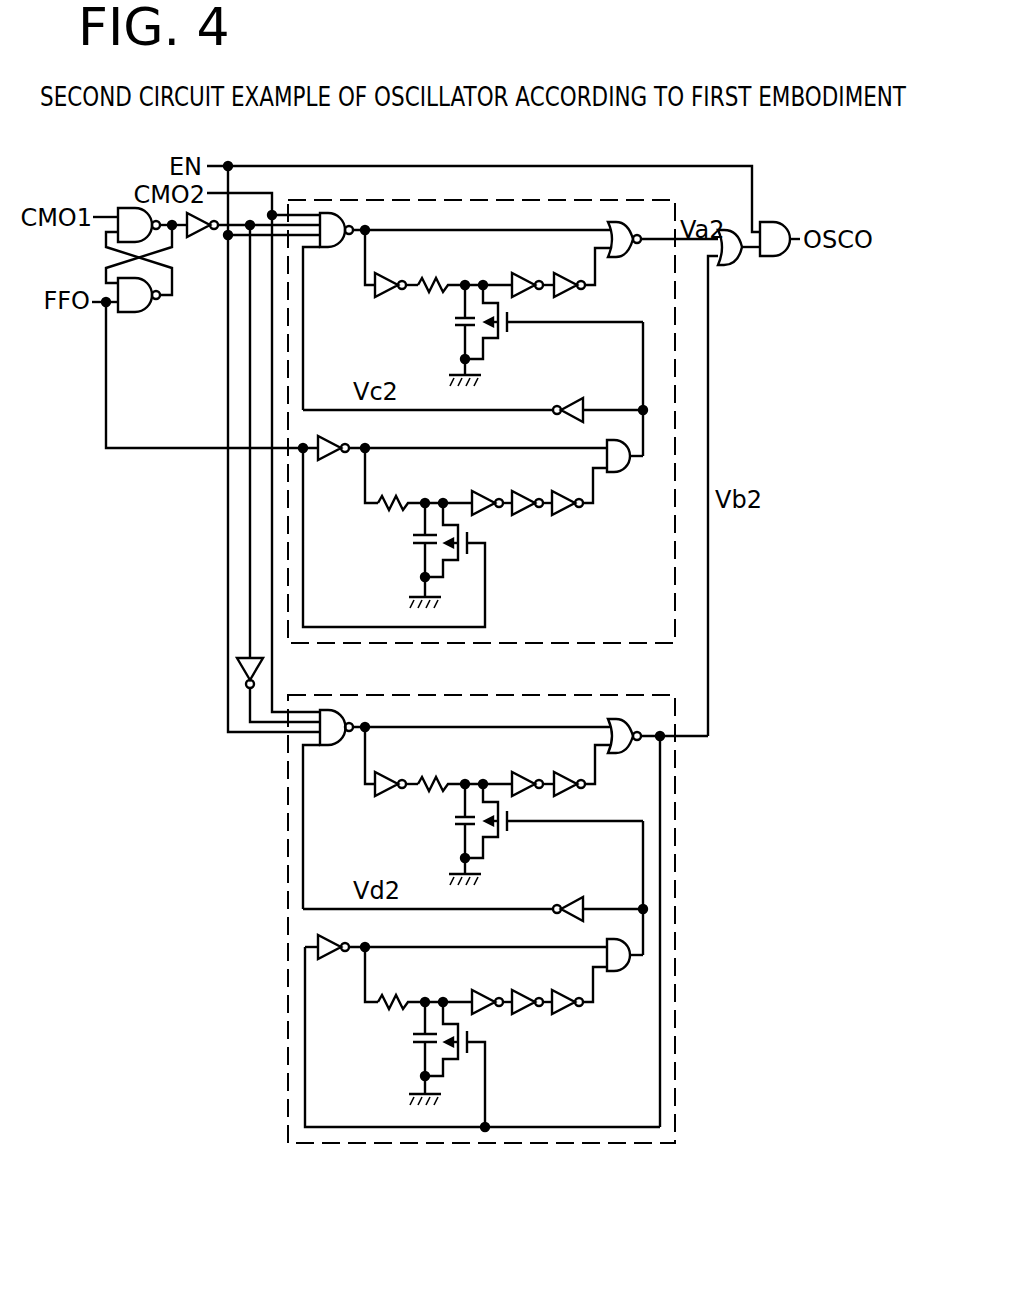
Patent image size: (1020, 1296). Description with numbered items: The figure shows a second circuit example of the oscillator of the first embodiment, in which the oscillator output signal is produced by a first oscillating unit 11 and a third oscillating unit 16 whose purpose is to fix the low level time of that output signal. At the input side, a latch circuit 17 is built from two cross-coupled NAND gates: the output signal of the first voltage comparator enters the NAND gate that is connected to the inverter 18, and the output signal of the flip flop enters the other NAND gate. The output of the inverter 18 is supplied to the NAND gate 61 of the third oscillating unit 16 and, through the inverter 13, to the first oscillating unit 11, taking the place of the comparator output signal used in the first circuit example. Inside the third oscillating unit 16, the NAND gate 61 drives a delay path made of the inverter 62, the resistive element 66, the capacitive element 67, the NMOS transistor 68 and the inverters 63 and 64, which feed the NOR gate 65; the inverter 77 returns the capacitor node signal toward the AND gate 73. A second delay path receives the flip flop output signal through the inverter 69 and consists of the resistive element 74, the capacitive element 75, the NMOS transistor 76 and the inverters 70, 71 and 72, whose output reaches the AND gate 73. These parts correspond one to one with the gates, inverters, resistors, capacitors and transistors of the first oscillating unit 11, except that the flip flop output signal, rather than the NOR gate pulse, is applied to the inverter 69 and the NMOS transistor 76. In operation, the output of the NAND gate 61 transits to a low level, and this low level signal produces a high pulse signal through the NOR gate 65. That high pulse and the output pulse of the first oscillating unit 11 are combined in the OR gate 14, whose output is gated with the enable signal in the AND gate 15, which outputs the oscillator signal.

The first oscillating unit 11 is at (553, 695).
The inverter 13 is at (240, 672).
The OR gate 14 is at (735, 266).
The AND gate 15 is at (772, 257).
The third oscillating unit 16 is at (550, 200).
The latch circuit 17 is at (126, 192).
The inverter 18 is at (205, 240).
The NAND gate 61 is at (333, 248).
The inverter 62 is at (390, 297).
The inverter 63 is at (524, 274).
The inverter 64 is at (566, 274).
The NOR gate 65 is at (621, 224).
The resistive element 66 is at (434, 278).
The capacitive element 67 is at (456, 326).
The NMOS transistor 68 is at (501, 340).
The inverter 69 is at (332, 461).
The inverter 70 is at (482, 491).
The inverter 71 is at (522, 491).
The inverter 72 is at (562, 491).
The AND gate 73 is at (618, 474).
The resistive element 74 is at (396, 493).
The capacitive element 75 is at (414, 541).
The NMOS transistor 76 is at (462, 561).
The inverter 77 is at (573, 398).